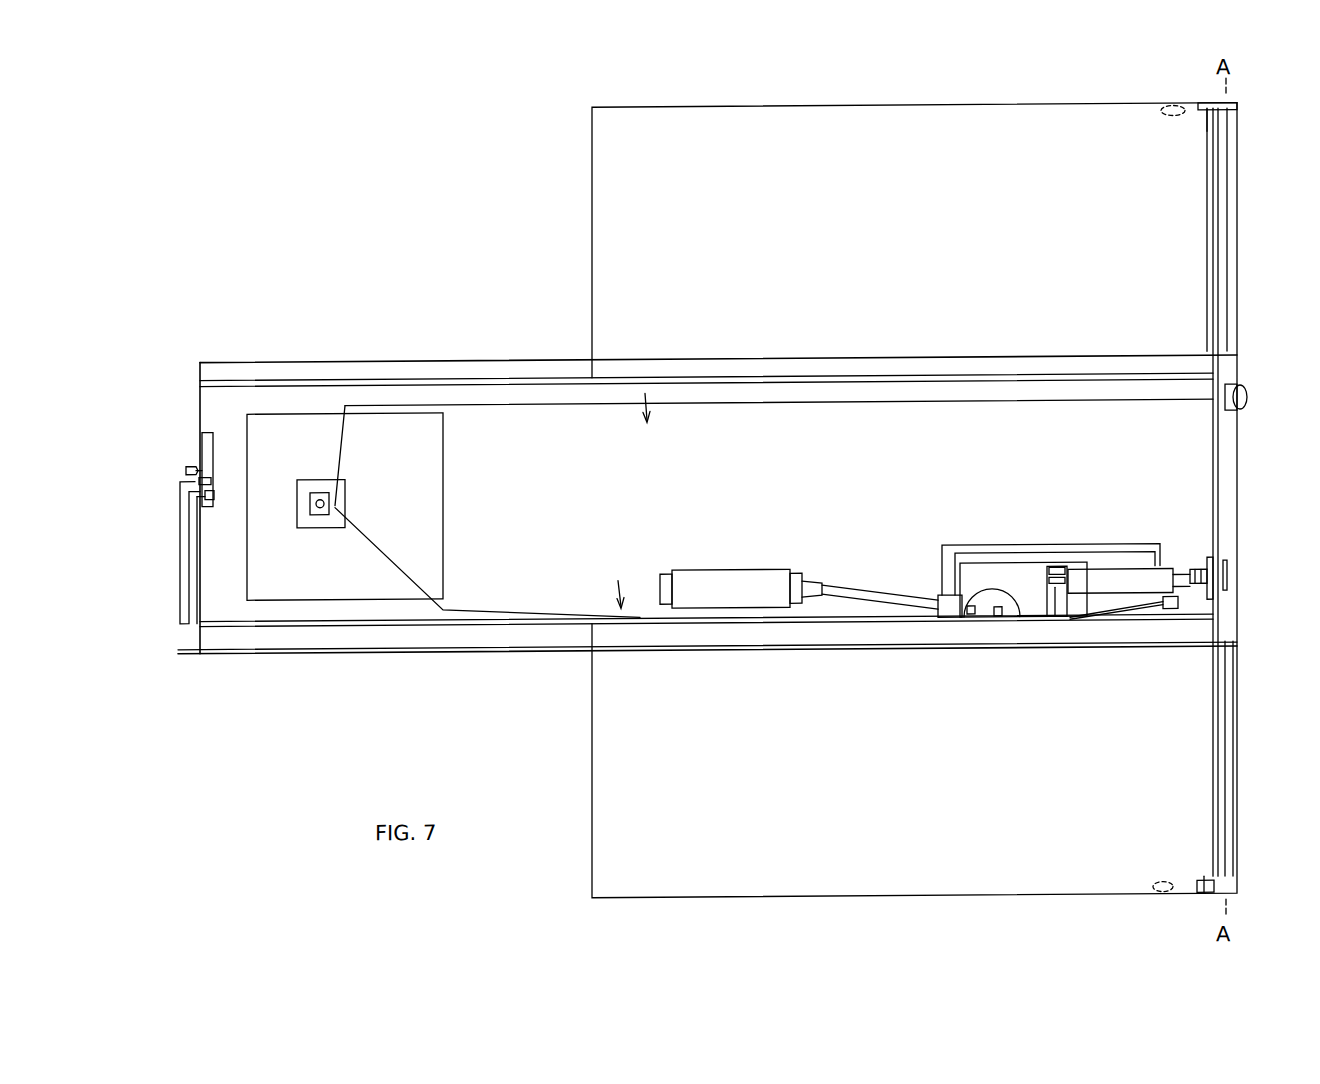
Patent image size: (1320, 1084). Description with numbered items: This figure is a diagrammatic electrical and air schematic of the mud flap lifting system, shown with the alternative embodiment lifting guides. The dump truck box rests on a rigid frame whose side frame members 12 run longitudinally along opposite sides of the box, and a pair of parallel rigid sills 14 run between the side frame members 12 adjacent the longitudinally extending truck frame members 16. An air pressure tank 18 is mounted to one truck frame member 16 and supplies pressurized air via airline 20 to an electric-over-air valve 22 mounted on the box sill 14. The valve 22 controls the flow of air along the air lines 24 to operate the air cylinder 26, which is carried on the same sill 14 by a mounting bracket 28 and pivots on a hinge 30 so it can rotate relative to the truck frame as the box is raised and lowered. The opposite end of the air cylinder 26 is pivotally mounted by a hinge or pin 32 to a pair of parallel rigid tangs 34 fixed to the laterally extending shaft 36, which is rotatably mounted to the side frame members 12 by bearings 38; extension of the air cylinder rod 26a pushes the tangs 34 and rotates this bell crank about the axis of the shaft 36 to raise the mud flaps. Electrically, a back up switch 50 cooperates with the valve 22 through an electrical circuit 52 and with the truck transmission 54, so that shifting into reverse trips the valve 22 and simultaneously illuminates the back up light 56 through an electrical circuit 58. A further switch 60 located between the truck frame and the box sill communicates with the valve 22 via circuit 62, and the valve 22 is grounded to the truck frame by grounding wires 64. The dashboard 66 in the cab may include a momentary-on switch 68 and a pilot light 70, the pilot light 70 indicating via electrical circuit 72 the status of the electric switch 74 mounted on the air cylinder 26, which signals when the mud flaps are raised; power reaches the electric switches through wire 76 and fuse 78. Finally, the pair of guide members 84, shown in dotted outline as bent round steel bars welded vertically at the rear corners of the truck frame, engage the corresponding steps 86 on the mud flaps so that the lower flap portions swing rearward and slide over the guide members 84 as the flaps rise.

The side frame member 12 is at (755, 107).
The box sill 14 is at (791, 358).
The truck frame member 16 is at (650, 500).
The air pressure tank 18 is at (712, 568).
The airline 20 is at (852, 592).
The electric-over-air valve 22 is at (936, 600).
The air lines 24 is at (1020, 548).
The air cylinder 26 is at (1105, 570).
The air cylinder rod 26a is at (1183, 574).
The mounting bracket 28 is at (1050, 612).
The hinge 30 is at (1056, 566).
The hinge or pin 32 is at (1198, 572).
The tang 34 is at (1214, 560).
The shaft 36 is at (1212, 310).
The bearing 38 is at (1205, 125).
The back up switch 50 is at (346, 506).
The electrical circuit 52 is at (487, 608).
The truck transmission 54 is at (444, 498).
The back up light 56 is at (1248, 397).
The electrical circuit 58 is at (865, 404).
The further switch 60 is at (997, 618).
The circuit 62 is at (968, 615).
The grounding wires 64 is at (990, 618).
The dashboard 66 is at (212, 430).
The momentary-on switch 68 is at (212, 480).
The pilot light 70 is at (212, 500).
The electrical circuit 72 is at (193, 557).
The electric switch 74 is at (1167, 614).
The wire 76 is at (188, 535).
The fuse 78 is at (184, 466).
The guide member 84 is at (1170, 108).
The step 86 is at (1206, 138).